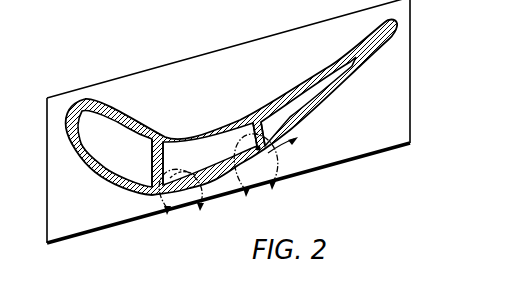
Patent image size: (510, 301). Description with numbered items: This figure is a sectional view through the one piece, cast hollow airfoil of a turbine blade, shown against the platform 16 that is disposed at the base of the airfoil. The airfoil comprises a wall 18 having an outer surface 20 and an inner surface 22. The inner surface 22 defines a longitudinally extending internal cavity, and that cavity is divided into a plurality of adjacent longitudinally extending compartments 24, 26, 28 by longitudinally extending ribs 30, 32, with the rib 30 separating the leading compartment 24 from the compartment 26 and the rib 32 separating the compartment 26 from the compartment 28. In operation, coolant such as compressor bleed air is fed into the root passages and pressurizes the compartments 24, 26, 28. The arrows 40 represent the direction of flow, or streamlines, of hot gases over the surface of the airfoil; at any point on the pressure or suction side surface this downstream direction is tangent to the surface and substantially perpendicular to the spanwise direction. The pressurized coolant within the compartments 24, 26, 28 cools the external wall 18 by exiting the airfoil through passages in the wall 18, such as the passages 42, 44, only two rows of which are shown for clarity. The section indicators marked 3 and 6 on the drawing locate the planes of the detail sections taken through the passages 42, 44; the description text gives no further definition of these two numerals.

The platform 16 is at (389, 135).
The wall 18 is at (105, 175).
The outer surface 20 is at (214, 184).
The inner surface 22 is at (229, 126).
The compartment 24 is at (128, 159).
The compartment 26 is at (220, 163).
The compartment 28 is at (322, 87).
The rib 30 is at (153, 163).
The rib 32 is at (256, 117).
The arrows 40 is at (285, 151).
The passage 42 is at (256, 152).
The passages 44 is at (187, 174).
The section line 3- 3 is at (258, 180).
The section line 6- 6 is at (183, 206).